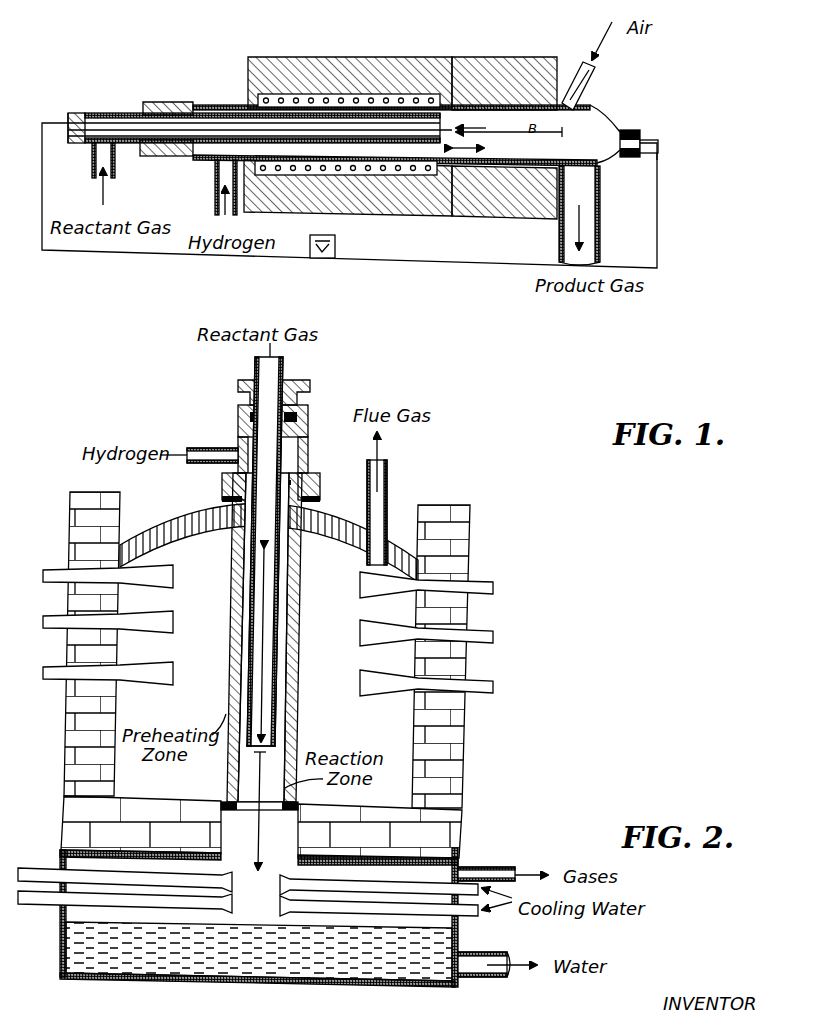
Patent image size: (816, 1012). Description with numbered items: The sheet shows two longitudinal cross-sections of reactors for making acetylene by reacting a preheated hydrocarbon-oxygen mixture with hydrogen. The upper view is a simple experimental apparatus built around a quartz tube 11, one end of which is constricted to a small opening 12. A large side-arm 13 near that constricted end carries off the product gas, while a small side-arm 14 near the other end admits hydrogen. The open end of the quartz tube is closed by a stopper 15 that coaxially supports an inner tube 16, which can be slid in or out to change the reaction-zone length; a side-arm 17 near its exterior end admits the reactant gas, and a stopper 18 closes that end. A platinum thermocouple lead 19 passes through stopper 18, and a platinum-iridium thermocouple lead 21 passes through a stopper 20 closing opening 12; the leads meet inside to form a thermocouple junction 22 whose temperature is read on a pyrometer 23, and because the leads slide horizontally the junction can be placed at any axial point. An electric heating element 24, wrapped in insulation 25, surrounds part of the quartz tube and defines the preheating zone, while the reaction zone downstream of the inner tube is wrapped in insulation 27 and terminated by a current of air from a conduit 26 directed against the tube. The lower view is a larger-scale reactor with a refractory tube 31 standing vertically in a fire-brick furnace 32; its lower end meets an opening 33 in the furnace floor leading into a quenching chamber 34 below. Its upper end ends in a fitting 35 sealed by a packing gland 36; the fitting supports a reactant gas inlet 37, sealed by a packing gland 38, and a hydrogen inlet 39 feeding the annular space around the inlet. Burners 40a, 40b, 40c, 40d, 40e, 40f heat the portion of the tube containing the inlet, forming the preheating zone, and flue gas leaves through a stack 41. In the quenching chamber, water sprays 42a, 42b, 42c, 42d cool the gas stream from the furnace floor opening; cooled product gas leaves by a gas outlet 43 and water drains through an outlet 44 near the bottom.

In FIG. 1, the quartz tube 11 is at (236, 106).
In FIG. 1, the opening 12 is at (633, 130).
In FIG. 1, the side-arm 13 is at (600, 172).
In FIG. 1, the side-arm 14 is at (213, 188).
In FIG. 1, the stopper 15 is at (165, 102).
In FIG. 1, the tube 16 is at (140, 112).
In FIG. 1, the side-arm 17 is at (98, 144).
In FIG. 1, the stopper 18 is at (78, 113).
In FIG. 1, the platinum thermocouple lead 19 is at (62, 121).
In FIG. 1, the stopper 20 is at (650, 154).
In FIG. 1, the platinum-iridium thermocouple lead 21 is at (657, 143).
In FIG. 1, the thermocouple junction 22 is at (470, 126).
In FIG. 1, the pyrometer 23 is at (335, 240).
In FIG. 1, the electric heating element 24 is at (284, 94).
In FIG. 1, the insulation 25 is at (338, 77).
In FIG. 1, the conduit 26 is at (576, 88).
In FIG. 1, the insulation 27 is at (508, 83).
In FIG. 2, the refractory tube 31 is at (296, 728).
In FIG. 2, the furnace 32 is at (442, 768).
In FIG. 2, the opening 33 is at (245, 800).
In FIG. 2, the quenching chamber 34 is at (62, 952).
In FIG. 2, the fitting 35 is at (307, 456).
In FIG. 2, the packing gland 36 is at (318, 506).
In FIG. 2, the reactant gas inlet 37 is at (281, 648).
In FIG. 2, the packing gland 38 is at (310, 388).
In FIG. 2, the hydrogen inlet 39 is at (213, 447).
In FIG. 2, the burner 40a is at (165, 576).
In FIG. 2, the burner 40b is at (165, 626).
In FIG. 2, the burner 40c is at (165, 677).
In FIG. 2, the burner 40d is at (487, 578).
In FIG. 2, the burner 40e is at (490, 637).
In FIG. 2, the burner 40f is at (492, 686).
In FIG. 2, the stack 41 is at (390, 488).
In FIG. 2, the water spray 42a is at (226, 873).
In FIG. 2, the water spray 42b is at (226, 910).
In FIG. 2, the water spray 42c is at (286, 879).
In FIG. 2, the water spray 42d is at (293, 915).
In FIG. 2, the gas outlet 43 is at (472, 868).
In FIG. 2, the outlet 44 is at (472, 953).